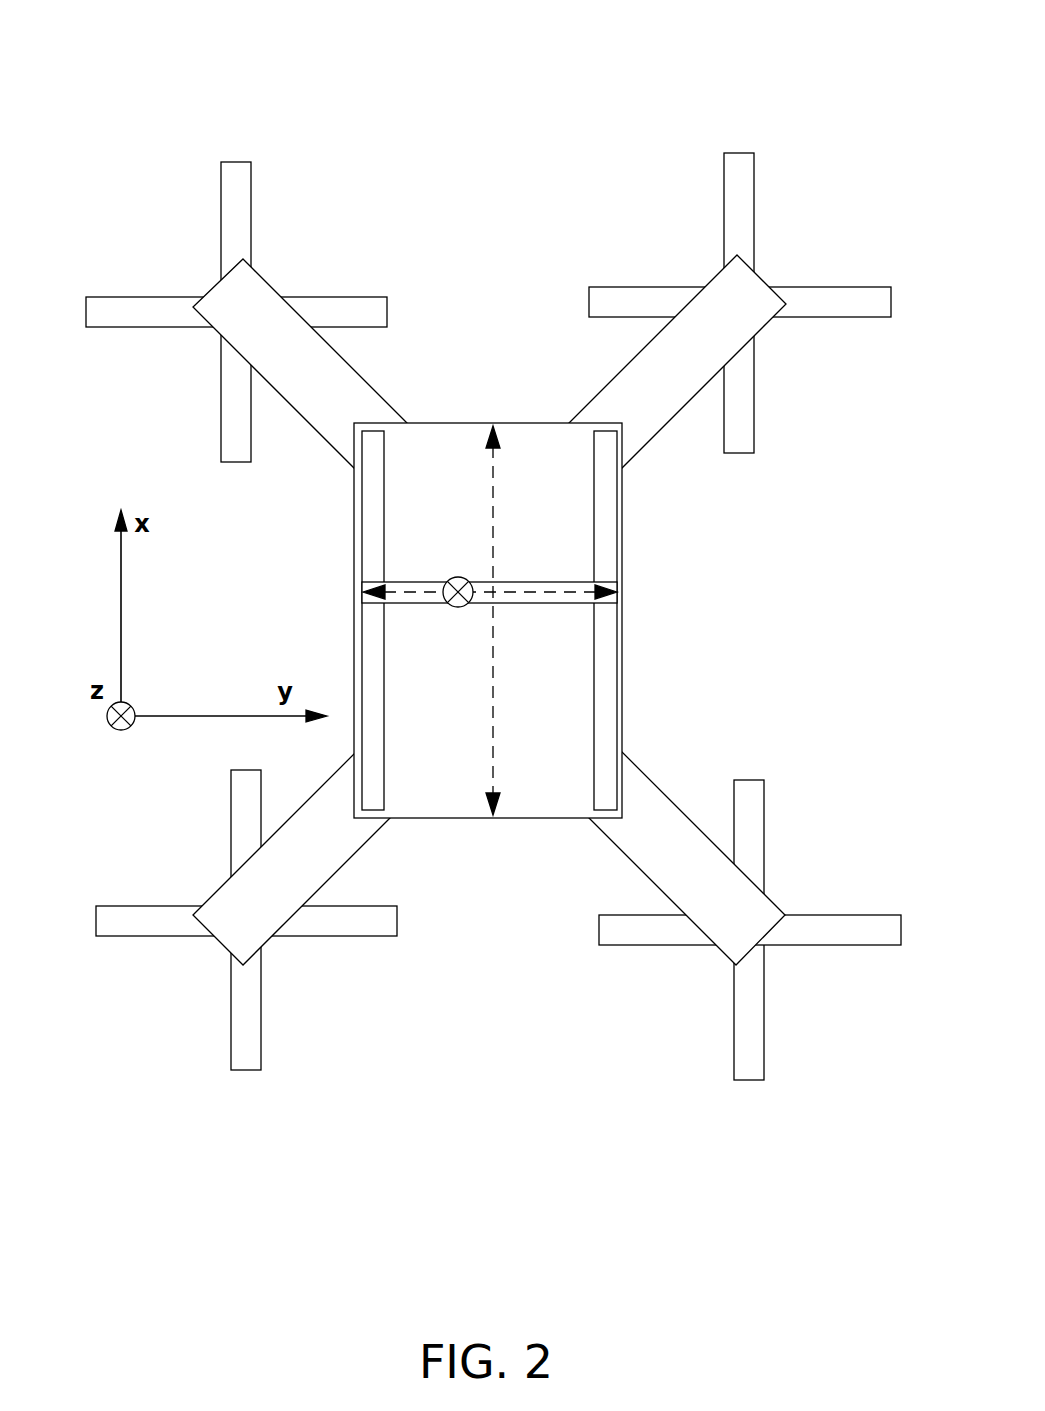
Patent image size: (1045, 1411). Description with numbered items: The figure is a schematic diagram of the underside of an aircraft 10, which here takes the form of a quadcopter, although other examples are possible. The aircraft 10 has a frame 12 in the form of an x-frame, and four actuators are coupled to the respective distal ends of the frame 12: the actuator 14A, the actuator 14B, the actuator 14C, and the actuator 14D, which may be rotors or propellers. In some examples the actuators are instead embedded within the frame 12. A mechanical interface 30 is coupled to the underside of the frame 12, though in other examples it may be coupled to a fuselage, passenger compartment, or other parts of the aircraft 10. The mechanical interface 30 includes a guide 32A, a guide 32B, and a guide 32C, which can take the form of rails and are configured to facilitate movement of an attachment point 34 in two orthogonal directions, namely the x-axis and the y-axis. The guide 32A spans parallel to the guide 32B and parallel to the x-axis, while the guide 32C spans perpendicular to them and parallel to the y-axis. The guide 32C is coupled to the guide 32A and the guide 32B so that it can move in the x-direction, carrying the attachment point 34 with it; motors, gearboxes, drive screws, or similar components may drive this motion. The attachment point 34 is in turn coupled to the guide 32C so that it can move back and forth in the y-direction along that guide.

The aircraft 10 is at (796, 72).
The frame 12 is at (380, 394).
The actuator 14A is at (125, 307).
The actuator 14B is at (605, 293).
The actuator 14C is at (125, 925).
The actuator 14D is at (628, 933).
The mechanical interface 30 is at (505, 620).
The guide 32A is at (370, 560).
The guide 32B is at (612, 707).
The guide 32C is at (573, 607).
The attachment point 34 is at (458, 577).